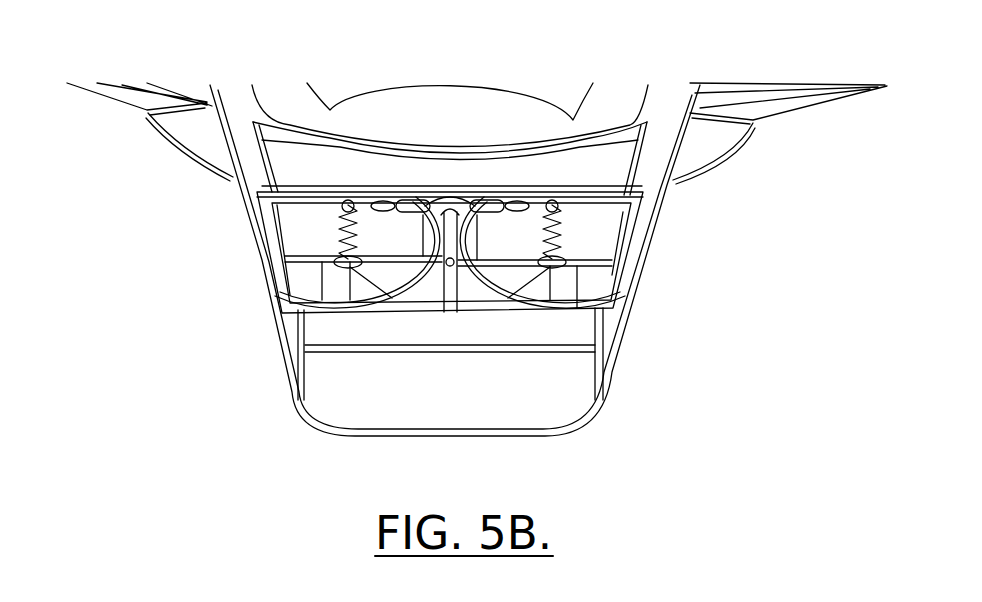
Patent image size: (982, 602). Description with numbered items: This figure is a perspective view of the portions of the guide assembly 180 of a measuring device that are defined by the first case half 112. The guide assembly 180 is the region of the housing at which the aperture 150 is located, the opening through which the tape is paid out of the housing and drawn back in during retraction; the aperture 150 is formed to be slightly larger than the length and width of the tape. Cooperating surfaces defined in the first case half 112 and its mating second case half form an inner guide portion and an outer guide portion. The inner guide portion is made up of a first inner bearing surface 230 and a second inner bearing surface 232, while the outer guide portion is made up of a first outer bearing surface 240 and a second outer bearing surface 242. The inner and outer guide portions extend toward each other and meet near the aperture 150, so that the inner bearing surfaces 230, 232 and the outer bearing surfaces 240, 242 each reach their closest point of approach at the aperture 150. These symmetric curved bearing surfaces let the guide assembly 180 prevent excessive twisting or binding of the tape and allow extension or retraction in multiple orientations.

The first case half 112 is at (665, 118).
The aperture 150 is at (449, 310).
The guide assembly 180 is at (609, 449).
The first inner bearing surface 230 is at (413, 200).
The second inner bearing surface 232 is at (497, 200).
The first outer bearing surface 240 is at (377, 320).
The second outer bearing surface 242 is at (530, 310).